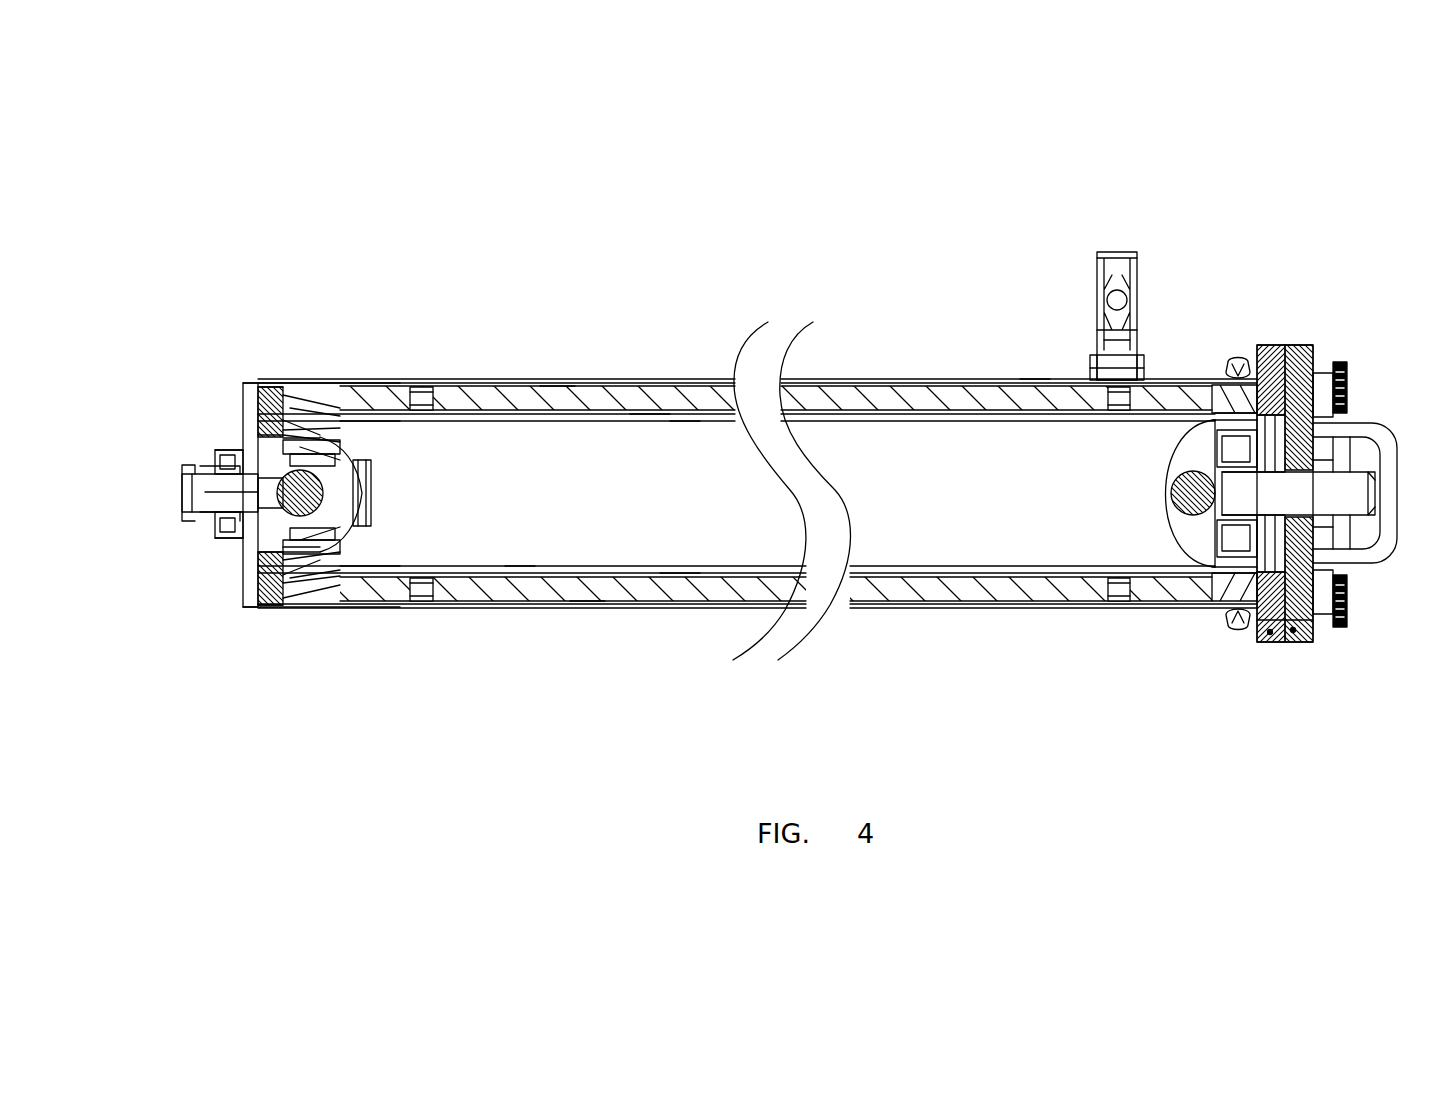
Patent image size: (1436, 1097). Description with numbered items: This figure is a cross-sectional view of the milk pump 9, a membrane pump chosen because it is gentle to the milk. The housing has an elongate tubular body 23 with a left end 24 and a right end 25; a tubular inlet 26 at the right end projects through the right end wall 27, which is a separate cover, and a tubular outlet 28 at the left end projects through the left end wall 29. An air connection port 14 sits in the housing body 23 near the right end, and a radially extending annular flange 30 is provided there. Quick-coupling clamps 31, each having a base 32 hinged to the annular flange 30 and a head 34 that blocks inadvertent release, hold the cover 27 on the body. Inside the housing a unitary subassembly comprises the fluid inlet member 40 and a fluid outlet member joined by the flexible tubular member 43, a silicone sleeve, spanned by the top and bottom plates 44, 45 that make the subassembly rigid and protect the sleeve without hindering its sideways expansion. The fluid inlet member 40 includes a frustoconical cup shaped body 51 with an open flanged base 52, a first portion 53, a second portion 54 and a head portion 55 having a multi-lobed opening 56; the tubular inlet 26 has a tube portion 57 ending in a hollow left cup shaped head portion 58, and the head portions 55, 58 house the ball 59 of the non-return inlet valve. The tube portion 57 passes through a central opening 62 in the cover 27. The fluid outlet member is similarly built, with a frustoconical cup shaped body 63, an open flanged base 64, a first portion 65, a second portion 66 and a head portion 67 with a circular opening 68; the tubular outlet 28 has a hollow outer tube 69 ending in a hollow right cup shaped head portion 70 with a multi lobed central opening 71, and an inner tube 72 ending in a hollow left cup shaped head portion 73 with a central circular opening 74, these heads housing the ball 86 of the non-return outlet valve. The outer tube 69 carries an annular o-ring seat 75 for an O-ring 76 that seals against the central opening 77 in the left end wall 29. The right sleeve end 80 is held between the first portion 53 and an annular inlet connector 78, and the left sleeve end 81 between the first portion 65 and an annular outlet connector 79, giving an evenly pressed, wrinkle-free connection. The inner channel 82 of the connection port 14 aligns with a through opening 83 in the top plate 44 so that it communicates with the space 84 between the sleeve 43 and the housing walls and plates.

The milk pump 9 is at (860, 344).
The air connection port 14 is at (1100, 258).
The elongate tubular body 23 is at (510, 378).
The left end 24 is at (268, 383).
The right end 25 is at (1268, 363).
The tubular inlet 26 is at (1323, 642).
The right end wall 27 is at (1322, 387).
The tubular outlet 28 is at (186, 540).
The left end wall 29 is at (256, 383).
The annular flange 30 is at (1272, 645).
The quick-coupling clamps 31 is at (1345, 372).
The base 32 is at (1232, 360).
The head 34 is at (1350, 390).
The fluid inlet member 40 is at (1292, 642).
The flexible tubular member 43 is at (650, 418).
The top plate 44 is at (557, 395).
The bottom plate 45 is at (587, 590).
The frustoconical cup shaped body 51 is at (1293, 358).
The open flanged base 52 is at (1302, 345).
The first portion 53 is at (1197, 385).
The second portion 54 is at (1157, 385).
The head portion 55 is at (1037, 380).
The multi-lobed opening 56 is at (1172, 463).
The tube portion 57 is at (1390, 563).
The hollow left cup shaped head portion 58 is at (1187, 615).
The ball 59 is at (1187, 492).
The central opening 62 is at (1278, 642).
The frustoconical cup shaped body 63 is at (305, 383).
The open flanged base 64 is at (277, 577).
The first portion 65 is at (322, 575).
The second portion 66 is at (349, 383).
The head portion 67 is at (396, 383).
The circular opening 68 is at (372, 601).
The hollow outer tube 69 is at (218, 540).
The hollow right cup shaped head portion 70 is at (258, 560).
The multi lobed central opening 71 is at (216, 383).
The inner tube 72 is at (345, 383).
The hollow left cup shaped head portion 73 is at (330, 383).
The central circular opening 74 is at (336, 580).
The annular o-ring seat 75 is at (242, 548).
The O-ring 76 is at (226, 383).
The central opening 77 is at (206, 383).
The annular inlet connector 78 is at (1213, 385).
The annular outlet connector 79 is at (312, 383).
The first open or right sleeve end 80 is at (1364, 423).
The second open or left sleeve end 81 is at (289, 577).
The inner channel 82 is at (1095, 378).
The through opening 83 is at (1117, 333).
The space 84 is at (685, 413).
The ball 86 is at (313, 561).